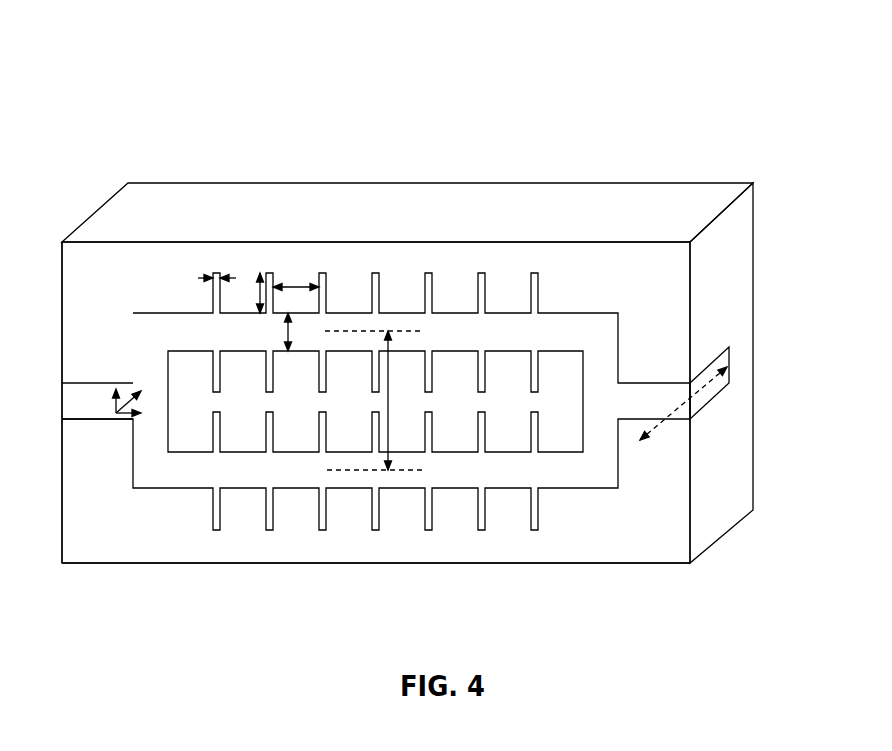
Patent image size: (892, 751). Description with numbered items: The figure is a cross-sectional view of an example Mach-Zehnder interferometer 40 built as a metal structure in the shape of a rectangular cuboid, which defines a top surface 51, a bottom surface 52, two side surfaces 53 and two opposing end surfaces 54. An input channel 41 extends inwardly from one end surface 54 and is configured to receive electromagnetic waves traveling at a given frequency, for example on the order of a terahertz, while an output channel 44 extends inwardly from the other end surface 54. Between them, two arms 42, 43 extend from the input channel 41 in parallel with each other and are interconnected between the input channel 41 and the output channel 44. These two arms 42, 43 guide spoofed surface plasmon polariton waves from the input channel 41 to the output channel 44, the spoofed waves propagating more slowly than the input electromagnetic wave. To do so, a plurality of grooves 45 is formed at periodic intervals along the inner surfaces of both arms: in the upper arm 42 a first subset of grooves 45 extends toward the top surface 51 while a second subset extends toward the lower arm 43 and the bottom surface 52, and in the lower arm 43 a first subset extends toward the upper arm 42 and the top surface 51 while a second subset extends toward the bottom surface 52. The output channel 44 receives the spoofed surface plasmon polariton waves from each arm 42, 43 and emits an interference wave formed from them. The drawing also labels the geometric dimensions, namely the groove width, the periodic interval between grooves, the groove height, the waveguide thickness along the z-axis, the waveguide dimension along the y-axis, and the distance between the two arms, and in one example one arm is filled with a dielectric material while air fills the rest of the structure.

The Mach-Zehnder interferometer 40 is at (114, 124).
The input channel 41 is at (72, 406).
The upper arm 42 is at (581, 319).
The lower arm 43 is at (550, 473).
The output channel 44 is at (713, 388).
The grooves 45 is at (376, 530).
The top surface 51 is at (520, 198).
The bottom surface 52 is at (606, 565).
The side surfaces 53 is at (116, 273).
The end surfaces 54 is at (62, 283).